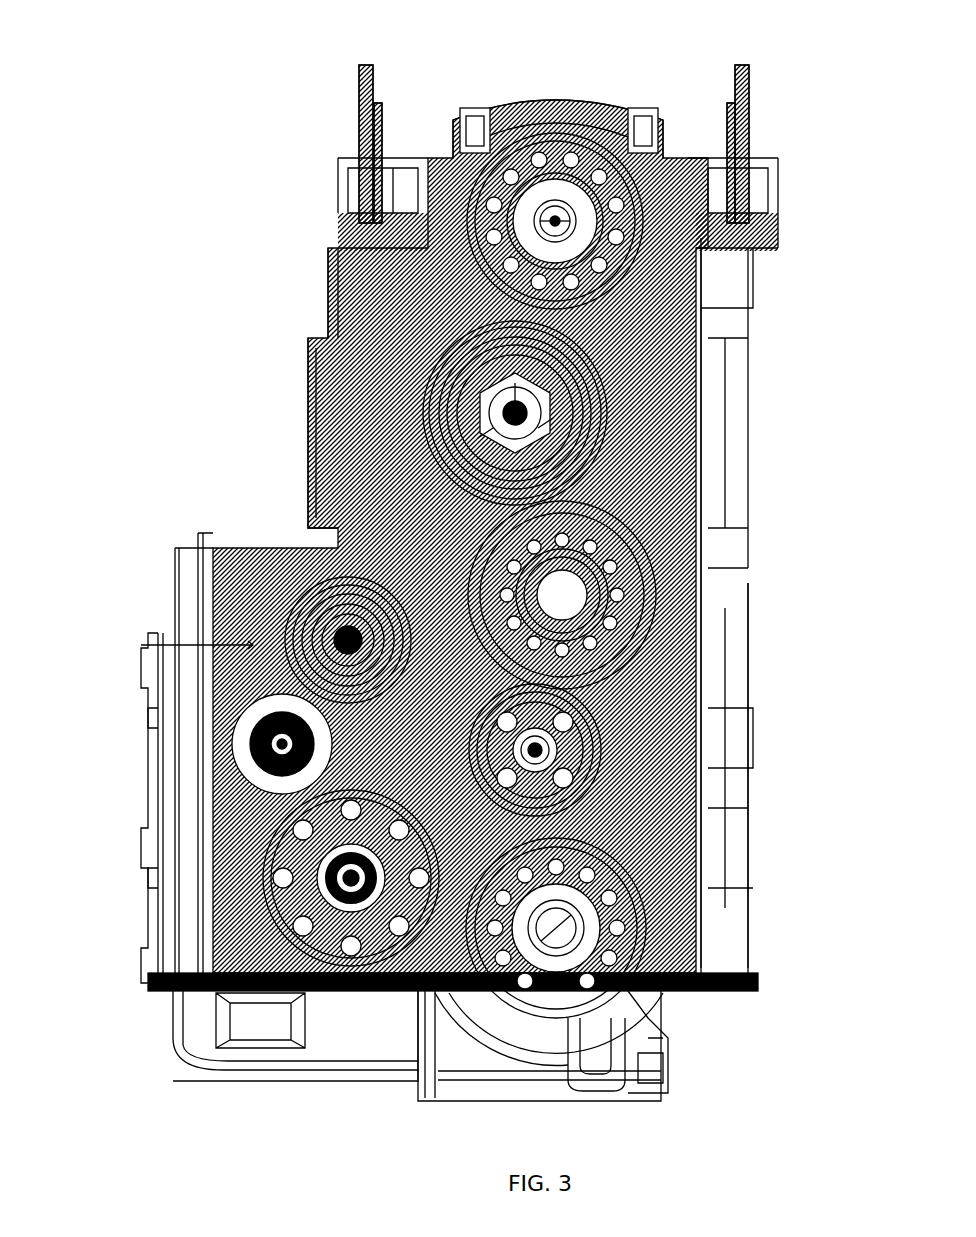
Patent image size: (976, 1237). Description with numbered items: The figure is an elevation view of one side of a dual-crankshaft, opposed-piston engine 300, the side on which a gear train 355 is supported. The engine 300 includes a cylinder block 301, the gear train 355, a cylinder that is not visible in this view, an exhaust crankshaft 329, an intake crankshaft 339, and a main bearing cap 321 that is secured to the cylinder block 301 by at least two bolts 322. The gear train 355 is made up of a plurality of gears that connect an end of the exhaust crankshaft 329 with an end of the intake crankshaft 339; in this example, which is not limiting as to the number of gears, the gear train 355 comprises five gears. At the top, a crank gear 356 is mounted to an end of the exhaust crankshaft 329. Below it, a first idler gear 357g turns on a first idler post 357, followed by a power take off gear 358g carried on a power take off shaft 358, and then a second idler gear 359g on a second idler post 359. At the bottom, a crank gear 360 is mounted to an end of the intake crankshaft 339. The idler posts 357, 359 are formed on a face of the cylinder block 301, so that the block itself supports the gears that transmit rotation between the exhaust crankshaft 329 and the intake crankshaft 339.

The dual-crankshaft opposed-piston engine 300 is at (207, 105).
The cylinder block 301 is at (208, 600).
The main bearing cap 321 is at (556, 93).
The bolts 322 is at (467, 105).
The exhaust crankshaft 329 is at (530, 210).
The gear train 355 is at (740, 575).
The crank gear 356 is at (613, 230).
The first idler post 357 is at (545, 432).
The first idler gear 357g is at (510, 413).
The power take off shaft 358 is at (615, 633).
The power take off gear 358g is at (575, 594).
The second idler post 359 is at (565, 760).
The second idler gear 359g is at (548, 745).
The crank gear 360 is at (615, 932).
The intake crankshaft 339 is at (537, 920).